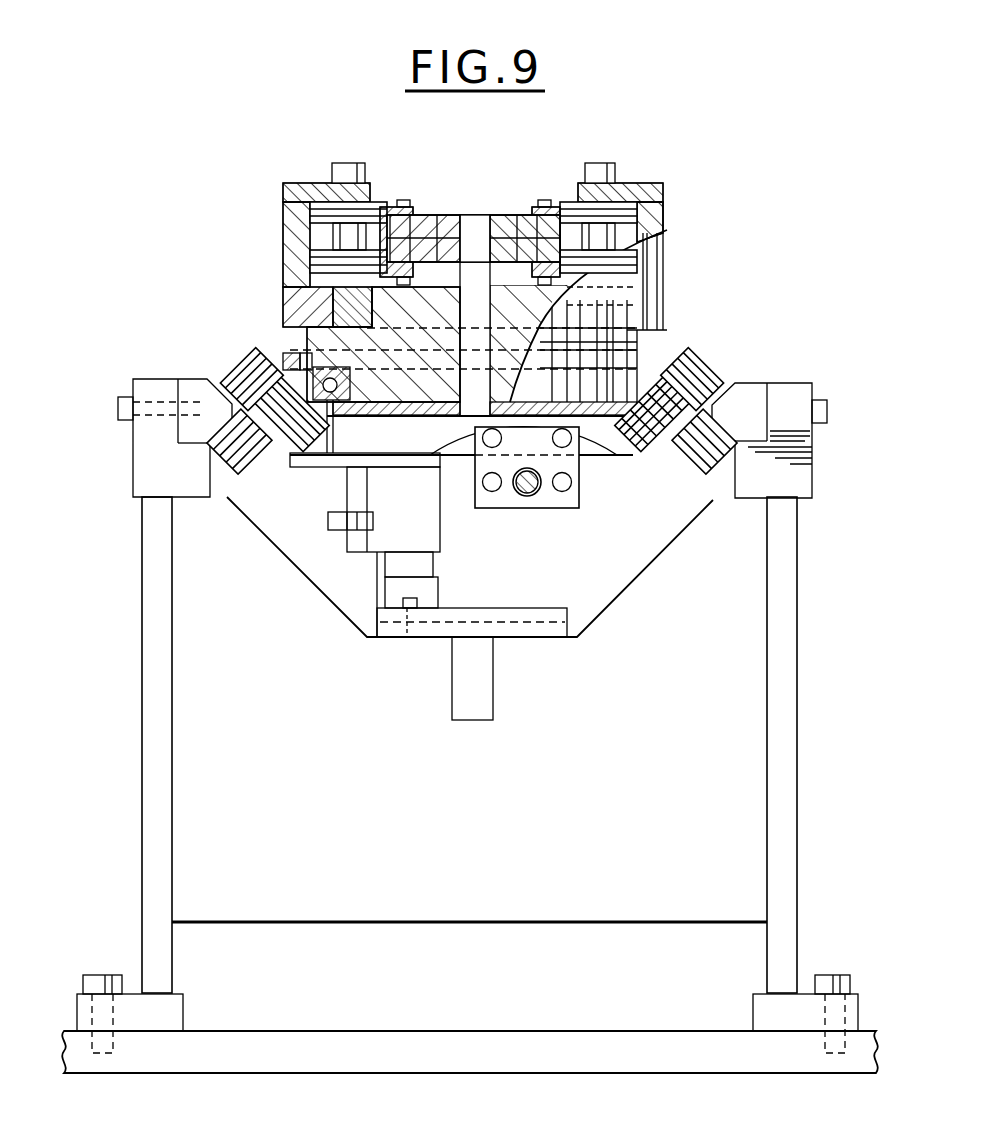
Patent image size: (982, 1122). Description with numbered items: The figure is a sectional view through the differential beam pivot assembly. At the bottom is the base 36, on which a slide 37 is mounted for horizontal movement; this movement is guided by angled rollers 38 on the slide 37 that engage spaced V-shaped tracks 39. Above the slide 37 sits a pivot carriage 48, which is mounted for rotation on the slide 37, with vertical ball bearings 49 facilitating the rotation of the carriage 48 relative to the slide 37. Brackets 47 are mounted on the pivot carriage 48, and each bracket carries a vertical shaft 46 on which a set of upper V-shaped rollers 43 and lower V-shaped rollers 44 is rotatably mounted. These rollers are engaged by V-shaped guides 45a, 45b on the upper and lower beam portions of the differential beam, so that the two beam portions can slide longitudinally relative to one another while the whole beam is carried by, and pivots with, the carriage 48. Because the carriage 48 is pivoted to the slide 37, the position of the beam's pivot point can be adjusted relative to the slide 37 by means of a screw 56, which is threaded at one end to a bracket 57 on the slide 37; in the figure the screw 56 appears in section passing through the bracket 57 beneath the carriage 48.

The base 36 is at (790, 673).
The slide 37 is at (593, 605).
The angled rollers 38 is at (235, 375).
The V-shaped tracks 39 is at (192, 388).
The upper V-shaped rollers 43 is at (305, 200).
The lower V-shaped rollers 44 is at (300, 285).
The V-shaped guide 45a is at (393, 213).
The V-shaped guide 45b is at (513, 217).
The vertical shaft 46 is at (345, 246).
The brackets 47 is at (283, 214).
The pivot carriage 48 is at (640, 342).
The vertical ball bearings 49 is at (315, 340).
The screw 56 is at (525, 500).
The bracket 57 is at (560, 500).